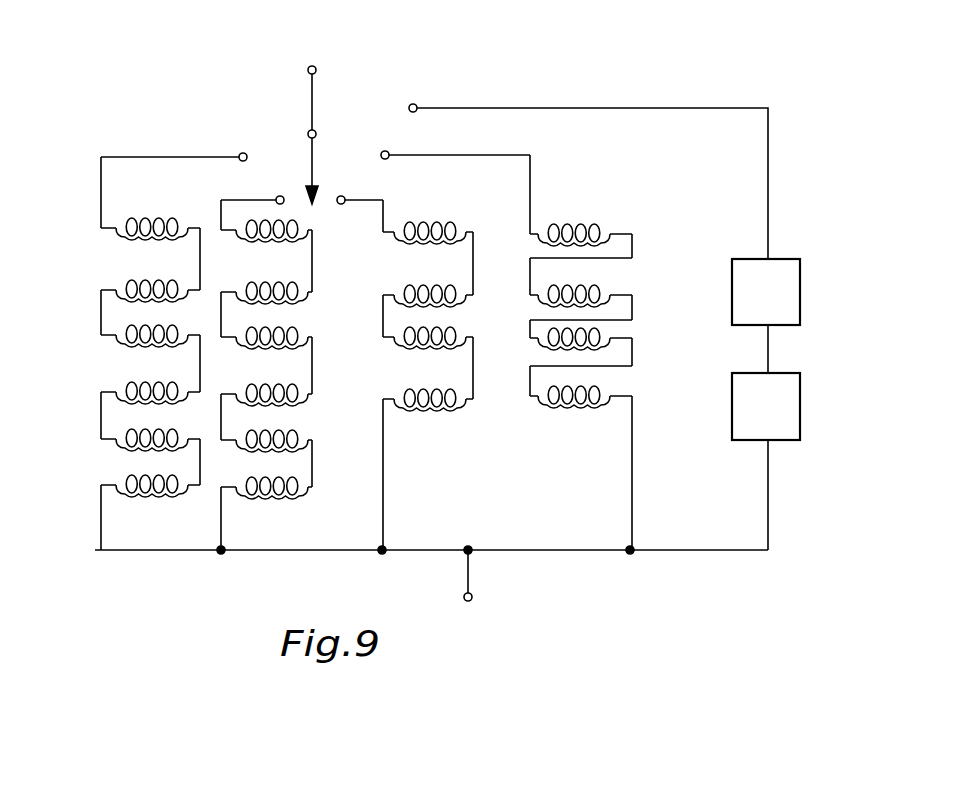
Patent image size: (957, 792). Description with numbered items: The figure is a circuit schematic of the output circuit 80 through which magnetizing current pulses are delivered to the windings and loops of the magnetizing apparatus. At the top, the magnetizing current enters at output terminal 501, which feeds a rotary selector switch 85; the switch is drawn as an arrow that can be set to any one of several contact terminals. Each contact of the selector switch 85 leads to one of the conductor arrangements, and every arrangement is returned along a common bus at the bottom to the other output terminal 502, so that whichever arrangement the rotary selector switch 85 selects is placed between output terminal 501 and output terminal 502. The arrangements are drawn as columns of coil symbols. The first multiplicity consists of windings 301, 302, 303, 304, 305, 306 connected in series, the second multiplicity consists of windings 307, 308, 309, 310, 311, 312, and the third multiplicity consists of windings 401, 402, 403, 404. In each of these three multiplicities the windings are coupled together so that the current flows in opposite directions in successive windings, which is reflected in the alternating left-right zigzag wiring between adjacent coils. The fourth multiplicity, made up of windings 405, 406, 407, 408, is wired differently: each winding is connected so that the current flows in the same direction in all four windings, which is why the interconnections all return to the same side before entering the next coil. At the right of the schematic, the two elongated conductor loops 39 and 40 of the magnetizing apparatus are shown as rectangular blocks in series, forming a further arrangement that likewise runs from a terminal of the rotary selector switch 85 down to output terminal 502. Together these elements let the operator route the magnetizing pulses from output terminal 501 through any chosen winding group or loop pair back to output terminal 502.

The elongated conductor loop 39 is at (800, 292).
The elongated conductor loop 40 is at (800, 393).
The output circuit 80 is at (521, 86).
The rotary selector switch 85 is at (289, 132).
The winding 301 is at (155, 220).
The winding 302 is at (131, 282).
The winding 303 is at (158, 338).
The winding 304 is at (131, 388).
The winding 305 is at (156, 442).
The winding 306 is at (137, 478).
The winding 307 is at (291, 230).
The winding 308 is at (249, 285).
The winding 309 is at (283, 338).
The winding 310 is at (247, 388).
The winding 311 is at (274, 442).
The winding 312 is at (265, 495).
The winding 401 is at (431, 222).
The winding 402 is at (433, 290).
The winding 403 is at (445, 340).
The winding 404 is at (431, 395).
The winding 405 is at (585, 222).
The winding 406 is at (595, 296).
The winding 407 is at (596, 339).
The winding 408 is at (600, 400).
The output terminal 501 is at (314, 66).
The output terminal 502 is at (473, 597).